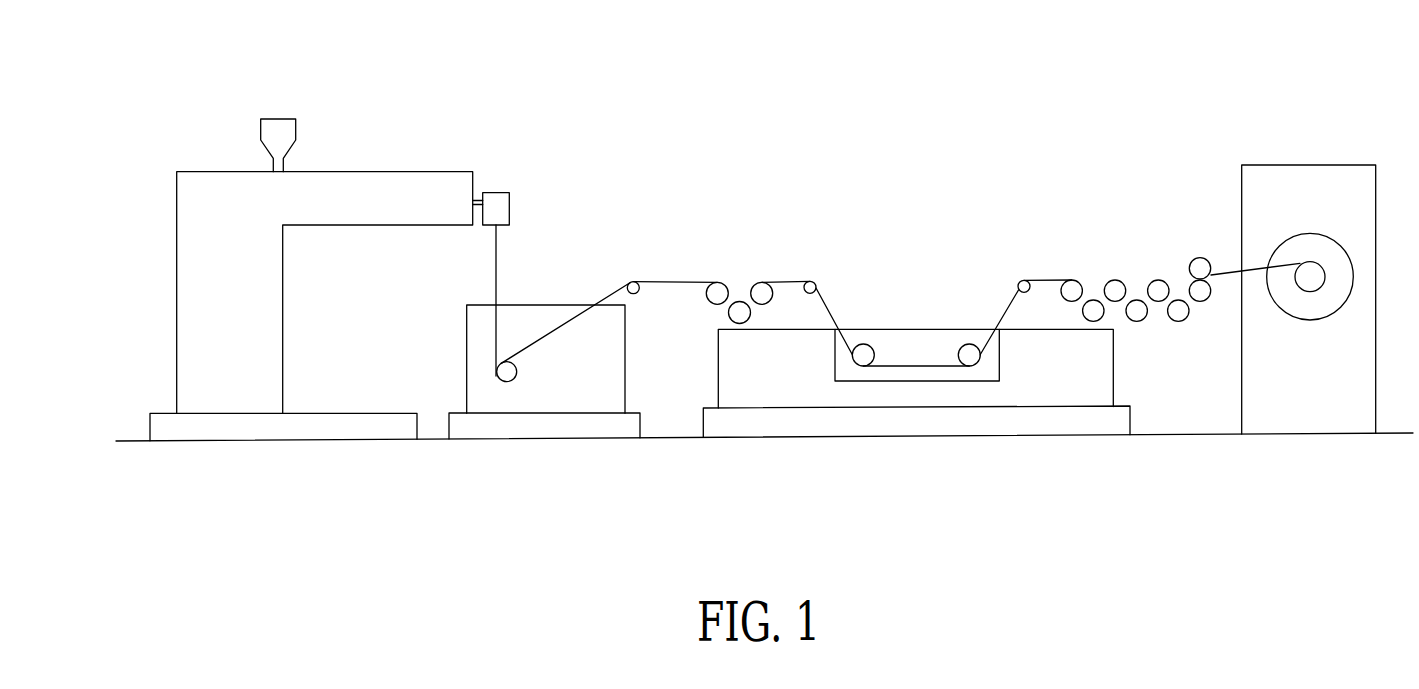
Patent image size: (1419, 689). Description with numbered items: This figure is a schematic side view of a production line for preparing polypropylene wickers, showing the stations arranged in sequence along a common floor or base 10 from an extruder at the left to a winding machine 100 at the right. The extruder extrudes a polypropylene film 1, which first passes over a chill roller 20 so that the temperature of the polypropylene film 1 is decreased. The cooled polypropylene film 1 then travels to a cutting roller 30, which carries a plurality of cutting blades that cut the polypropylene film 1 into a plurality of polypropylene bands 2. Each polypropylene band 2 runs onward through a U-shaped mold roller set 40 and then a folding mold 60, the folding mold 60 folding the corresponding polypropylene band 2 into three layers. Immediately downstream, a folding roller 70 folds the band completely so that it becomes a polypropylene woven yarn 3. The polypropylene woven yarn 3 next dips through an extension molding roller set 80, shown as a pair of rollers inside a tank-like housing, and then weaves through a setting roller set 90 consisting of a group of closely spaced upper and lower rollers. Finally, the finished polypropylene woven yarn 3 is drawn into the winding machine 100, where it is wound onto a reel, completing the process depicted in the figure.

The polypropylene film 1 is at (557, 345).
The polypropylene band 2 is at (672, 285).
The polypropylene woven yarn 3 is at (790, 280).
The base 10 is at (235, 449).
The chill roller 20 is at (503, 381).
The cutting roller 30 is at (633, 281).
The U-shaped mold roller set 40 is at (710, 303).
The folding mold 60 is at (745, 323).
The folding roller 70 is at (762, 281).
The extension molding roller set 80 is at (917, 360).
The setting roller set 90 is at (1137, 272).
The winding machine 100 is at (1311, 164).